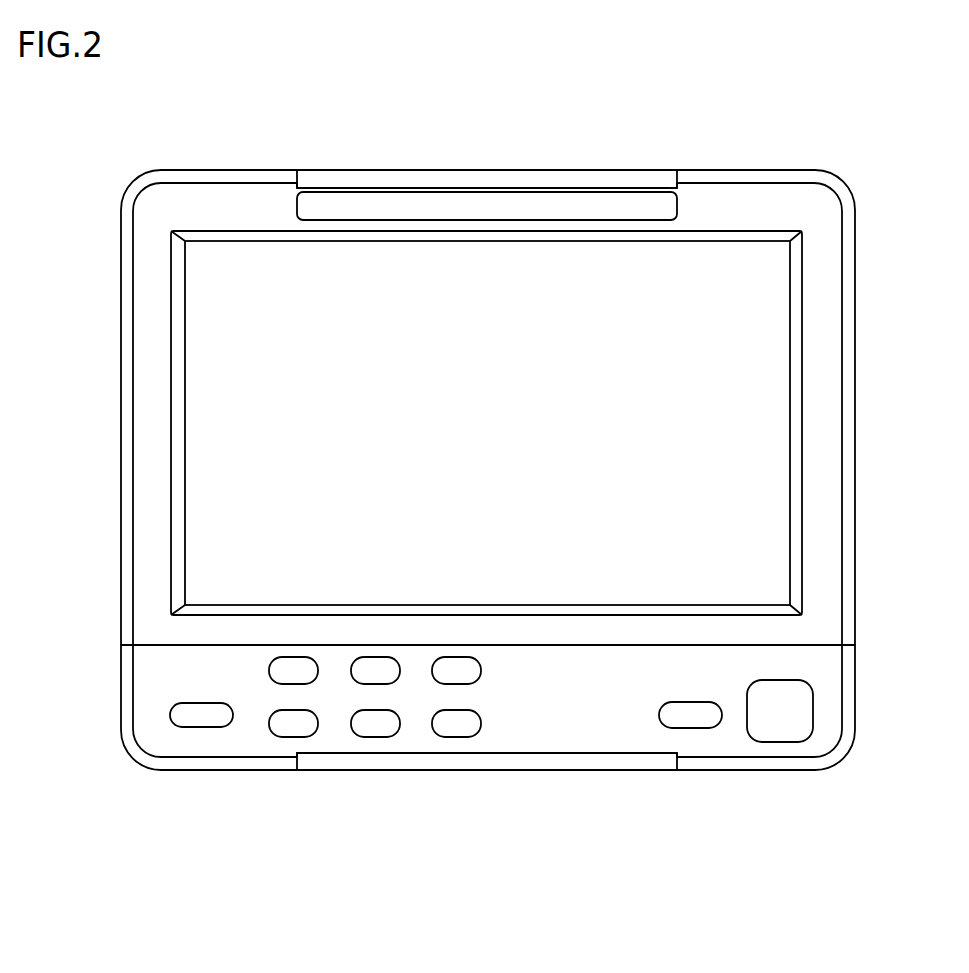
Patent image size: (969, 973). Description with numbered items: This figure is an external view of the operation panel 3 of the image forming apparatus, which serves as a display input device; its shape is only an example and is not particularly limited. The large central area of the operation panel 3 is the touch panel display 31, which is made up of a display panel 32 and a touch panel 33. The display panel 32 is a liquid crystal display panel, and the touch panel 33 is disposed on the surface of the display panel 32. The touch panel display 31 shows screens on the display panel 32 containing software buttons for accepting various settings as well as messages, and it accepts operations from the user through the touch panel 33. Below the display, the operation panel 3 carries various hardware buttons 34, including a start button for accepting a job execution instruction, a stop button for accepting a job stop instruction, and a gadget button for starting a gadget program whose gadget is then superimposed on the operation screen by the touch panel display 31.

The operation panel 3 is at (137, 182).
The touch panel display 31 is at (411, 423).
The display panel 32 is at (405, 423).
The touch panel 33 is at (265, 395).
The hardware buttons 34 is at (203, 718).